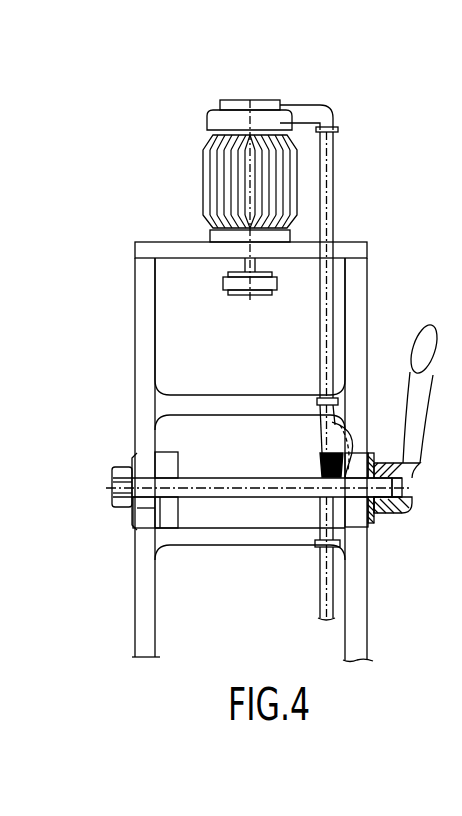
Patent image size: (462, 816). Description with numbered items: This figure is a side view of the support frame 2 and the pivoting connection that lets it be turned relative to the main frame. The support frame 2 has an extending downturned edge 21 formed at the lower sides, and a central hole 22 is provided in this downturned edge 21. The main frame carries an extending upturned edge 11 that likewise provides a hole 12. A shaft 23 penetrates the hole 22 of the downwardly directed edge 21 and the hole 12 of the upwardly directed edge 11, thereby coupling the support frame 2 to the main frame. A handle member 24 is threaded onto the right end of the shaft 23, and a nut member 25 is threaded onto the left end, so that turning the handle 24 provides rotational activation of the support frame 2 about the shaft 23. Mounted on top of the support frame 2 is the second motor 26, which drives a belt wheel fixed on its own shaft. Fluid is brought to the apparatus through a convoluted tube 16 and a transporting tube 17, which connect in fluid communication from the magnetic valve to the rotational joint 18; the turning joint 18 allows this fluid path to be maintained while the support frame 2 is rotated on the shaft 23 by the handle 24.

The support frame 2 is at (366, 312).
The extending upturned edge 11 is at (165, 518).
The hole 12 is at (178, 478).
The convoluted tube 16 is at (325, 432).
The transporting tube 17 is at (333, 178).
The rotational joint 18 is at (232, 104).
The extending downturned edge 21 is at (143, 513).
The central hole 22 is at (133, 458).
The shaft 23 is at (137, 479).
The handle member 24 is at (408, 506).
The nut member 25 is at (118, 490).
The second motor 26 is at (207, 120).